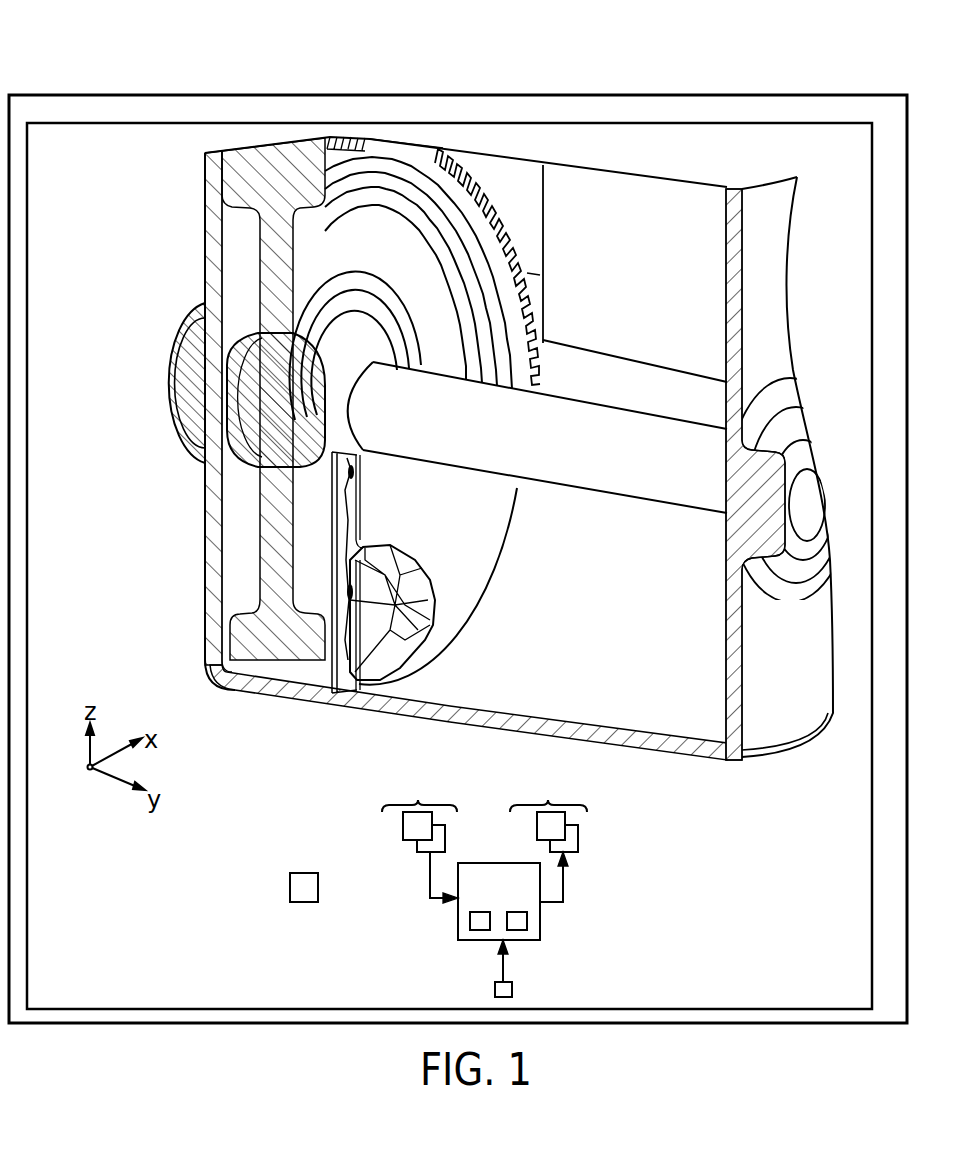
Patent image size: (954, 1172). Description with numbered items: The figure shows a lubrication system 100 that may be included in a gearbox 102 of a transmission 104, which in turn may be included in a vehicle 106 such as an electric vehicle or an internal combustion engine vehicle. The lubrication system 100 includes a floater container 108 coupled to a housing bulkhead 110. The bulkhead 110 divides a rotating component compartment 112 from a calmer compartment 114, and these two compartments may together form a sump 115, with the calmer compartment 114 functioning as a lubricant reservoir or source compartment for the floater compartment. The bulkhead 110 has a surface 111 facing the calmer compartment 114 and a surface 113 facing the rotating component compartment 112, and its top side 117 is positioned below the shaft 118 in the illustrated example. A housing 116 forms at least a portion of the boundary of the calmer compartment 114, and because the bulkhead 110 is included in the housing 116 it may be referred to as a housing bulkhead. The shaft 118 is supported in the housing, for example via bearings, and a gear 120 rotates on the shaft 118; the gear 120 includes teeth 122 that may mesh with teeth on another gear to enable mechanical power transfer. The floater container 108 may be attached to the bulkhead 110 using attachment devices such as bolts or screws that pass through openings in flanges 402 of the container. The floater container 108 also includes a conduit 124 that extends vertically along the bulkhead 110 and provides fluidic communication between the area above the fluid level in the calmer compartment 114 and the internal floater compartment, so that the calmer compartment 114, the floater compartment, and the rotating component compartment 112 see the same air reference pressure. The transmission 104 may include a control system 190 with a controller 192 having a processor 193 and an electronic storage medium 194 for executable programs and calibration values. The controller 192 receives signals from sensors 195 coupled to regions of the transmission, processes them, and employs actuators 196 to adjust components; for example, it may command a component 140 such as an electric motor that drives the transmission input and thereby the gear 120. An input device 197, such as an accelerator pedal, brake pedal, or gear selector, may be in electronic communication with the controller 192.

The lubrication system 100 is at (537, 565).
The gearbox 102 is at (582, 215).
The transmission 104 is at (30, 124).
The vehicle 106 is at (11, 96).
The floater container 108 is at (397, 633).
The housing bulkhead 110 is at (490, 505).
The surface 111 is at (445, 541).
The rotating component compartment 112 is at (243, 543).
The surface 113 is at (337, 560).
The calmer compartment 114 is at (522, 655).
The sump 115 is at (677, 612).
The housing 116 is at (730, 648).
The top side 117 is at (527, 383).
The shaft 118 is at (573, 430).
The gear 120 is at (390, 283).
The teeth 122 is at (527, 273).
The conduit 124 is at (353, 512).
The component 140 is at (290, 893).
The control system 190 is at (358, 785).
The controller 192 is at (517, 892).
The processor 193 is at (468, 920).
The electronic storage medium 194 is at (527, 920).
The sensors 195 is at (420, 834).
The actuators 196 is at (548, 834).
The input device 197 is at (512, 988).
The flanges 402 is at (350, 620).